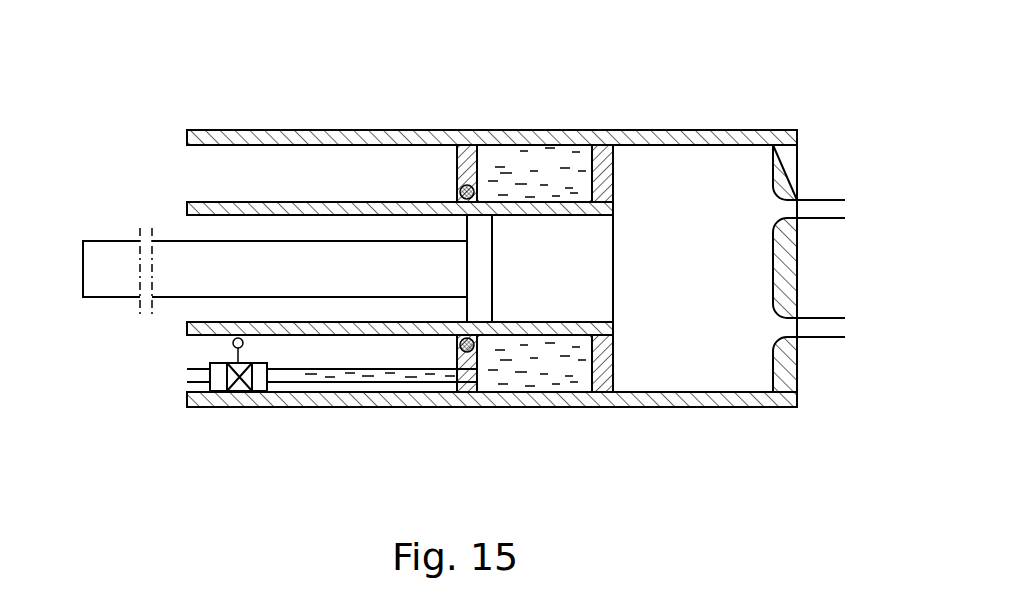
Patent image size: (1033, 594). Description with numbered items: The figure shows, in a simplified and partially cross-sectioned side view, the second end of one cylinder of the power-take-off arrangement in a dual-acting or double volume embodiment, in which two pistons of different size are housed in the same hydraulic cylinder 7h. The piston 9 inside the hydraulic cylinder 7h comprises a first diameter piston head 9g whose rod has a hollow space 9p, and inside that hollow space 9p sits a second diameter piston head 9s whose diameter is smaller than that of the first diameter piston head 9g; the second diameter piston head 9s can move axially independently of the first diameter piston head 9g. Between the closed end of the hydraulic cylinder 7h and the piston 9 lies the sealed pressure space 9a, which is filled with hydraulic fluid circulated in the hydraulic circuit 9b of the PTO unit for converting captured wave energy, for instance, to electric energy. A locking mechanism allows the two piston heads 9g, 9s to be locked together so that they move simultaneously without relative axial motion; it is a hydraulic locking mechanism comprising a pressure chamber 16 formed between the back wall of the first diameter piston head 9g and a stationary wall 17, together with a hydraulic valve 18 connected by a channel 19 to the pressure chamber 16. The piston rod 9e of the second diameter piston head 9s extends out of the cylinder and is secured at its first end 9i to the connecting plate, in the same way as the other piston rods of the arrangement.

The hydraulic cylinder 7h is at (253, 137).
The piston 9 is at (665, 293).
The pressure space 9a is at (693, 153).
The hydraulic circuit 9b is at (822, 205).
The piston rod 9e is at (118, 287).
The first diameter piston head 9g is at (601, 150).
The first end of piston rod 9i is at (83, 266).
The hollow space 9p is at (600, 247).
The second diameter piston head 9s is at (483, 292).
The pressure chamber 16 is at (537, 155).
The stationary wall 17 is at (465, 160).
The hydraulic valve 18 is at (217, 388).
The channel 19 is at (303, 388).